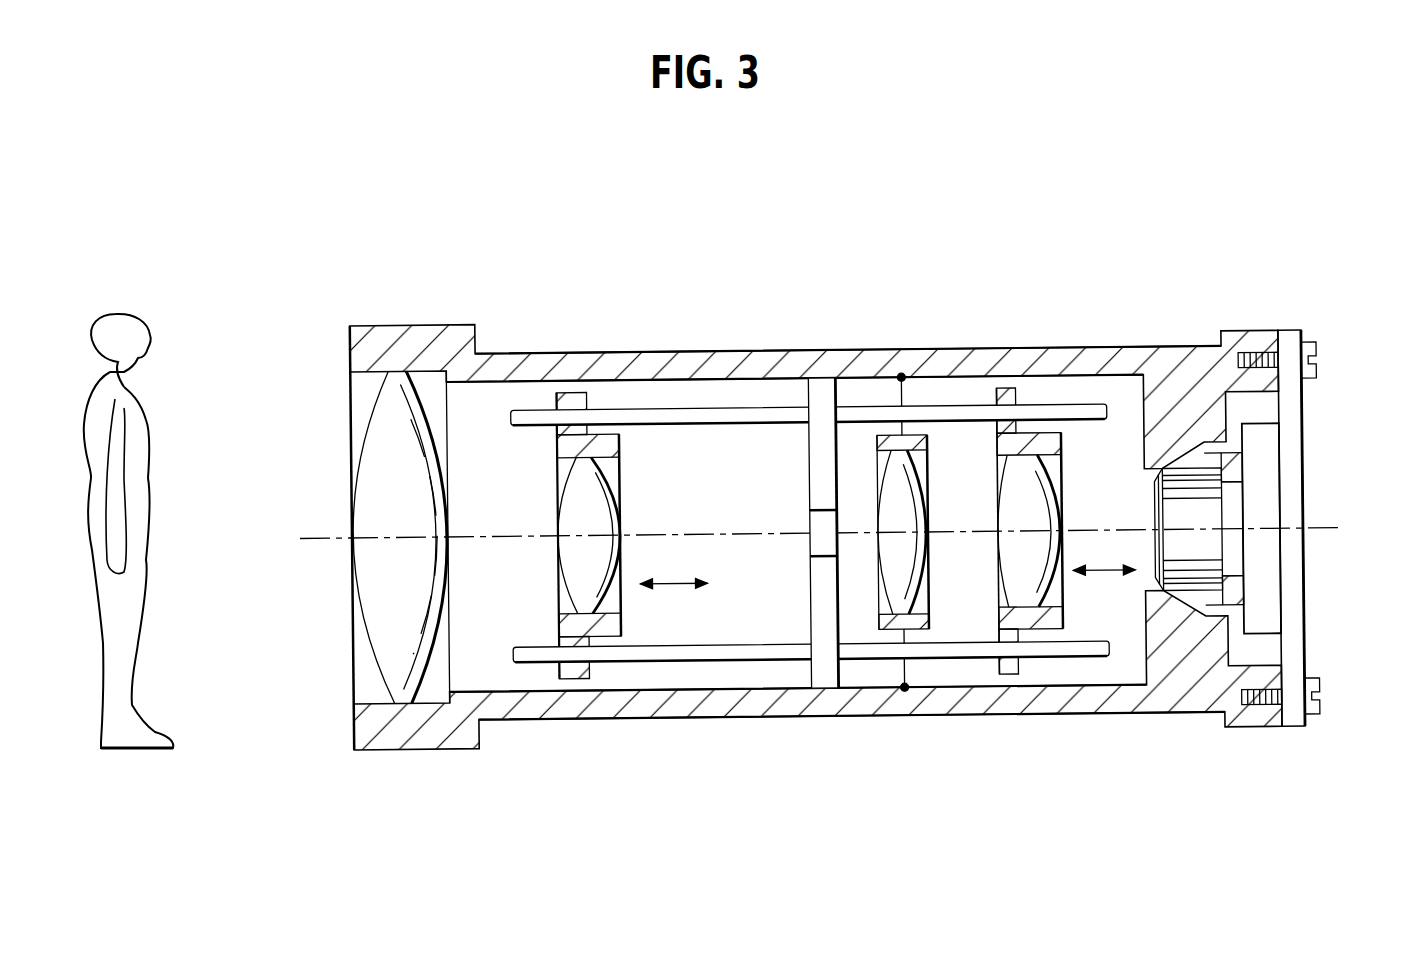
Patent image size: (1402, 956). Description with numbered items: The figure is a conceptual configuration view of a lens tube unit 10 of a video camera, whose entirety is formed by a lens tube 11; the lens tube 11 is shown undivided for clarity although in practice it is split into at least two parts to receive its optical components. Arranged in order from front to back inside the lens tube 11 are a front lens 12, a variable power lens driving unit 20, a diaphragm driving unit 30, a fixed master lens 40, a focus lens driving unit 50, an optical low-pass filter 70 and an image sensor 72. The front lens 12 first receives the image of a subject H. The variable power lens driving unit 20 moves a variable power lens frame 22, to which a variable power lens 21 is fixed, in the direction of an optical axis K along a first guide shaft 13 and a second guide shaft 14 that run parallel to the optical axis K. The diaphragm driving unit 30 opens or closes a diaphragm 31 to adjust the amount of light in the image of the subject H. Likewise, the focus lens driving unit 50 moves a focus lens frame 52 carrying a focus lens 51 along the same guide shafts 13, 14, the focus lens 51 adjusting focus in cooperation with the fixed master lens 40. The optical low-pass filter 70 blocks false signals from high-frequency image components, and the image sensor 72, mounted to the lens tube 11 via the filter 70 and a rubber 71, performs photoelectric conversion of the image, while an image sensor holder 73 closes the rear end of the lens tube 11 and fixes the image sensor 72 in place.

The lens tube unit 10 is at (318, 280).
The lens tube 11 is at (395, 326).
The front lens 12 is at (372, 612).
The first guide shaft 13 is at (540, 414).
The second guide shaft 14 is at (548, 668).
The variable power lens driving unit 20 is at (587, 533).
The variable power lens 21 is at (577, 512).
The variable power lens frame 22 is at (612, 650).
The diaphragm driving unit 30 is at (804, 472).
The diaphragm 31 is at (822, 562).
The fixed master lens 40 is at (915, 518).
The focus lens driving unit 50 is at (1091, 520).
The focus lens 51 is at (1045, 518).
The focus lens frame 52 is at (1040, 647).
The optical low-pass filter 70 is at (1210, 516).
The rubber 71 is at (1243, 605).
The image sensor 72 is at (1270, 463).
The image sensor holder 73 is at (1293, 573).
The subject H is at (103, 315).
The optical axis K is at (320, 538).